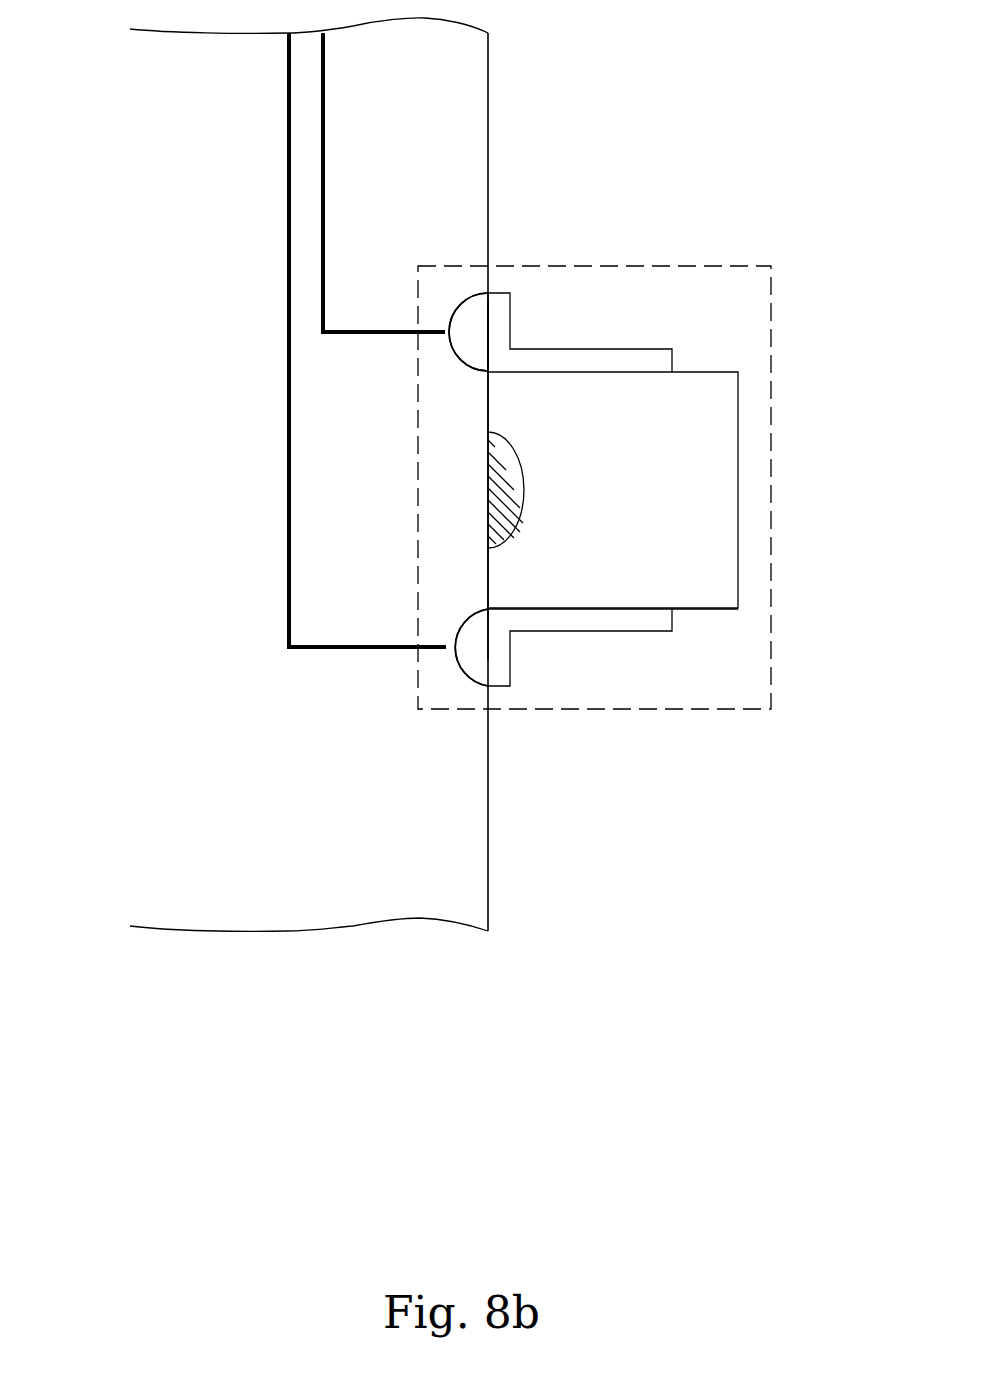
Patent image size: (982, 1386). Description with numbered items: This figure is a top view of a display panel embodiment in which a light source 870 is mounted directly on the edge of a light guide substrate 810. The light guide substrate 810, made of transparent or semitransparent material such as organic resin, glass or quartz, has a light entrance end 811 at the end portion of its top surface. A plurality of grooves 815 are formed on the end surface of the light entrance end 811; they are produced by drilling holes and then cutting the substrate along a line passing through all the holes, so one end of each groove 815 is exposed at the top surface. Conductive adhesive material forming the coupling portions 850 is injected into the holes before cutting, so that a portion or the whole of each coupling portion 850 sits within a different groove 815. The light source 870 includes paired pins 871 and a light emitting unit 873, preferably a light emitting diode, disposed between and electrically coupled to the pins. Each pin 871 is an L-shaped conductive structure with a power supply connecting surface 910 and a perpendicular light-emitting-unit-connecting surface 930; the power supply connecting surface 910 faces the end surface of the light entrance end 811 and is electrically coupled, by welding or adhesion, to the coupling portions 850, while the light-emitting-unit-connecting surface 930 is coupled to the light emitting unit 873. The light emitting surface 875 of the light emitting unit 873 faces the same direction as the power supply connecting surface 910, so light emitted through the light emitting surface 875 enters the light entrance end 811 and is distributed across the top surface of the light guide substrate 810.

The light guide substrate 810 is at (207, 914).
The light entrance end 811 is at (457, 845).
The grooves 815 is at (467, 294).
The coupling portions 850 is at (470, 653).
The light source 870 is at (771, 616).
The paired pins 871 is at (628, 620).
The light emitting unit 873 is at (700, 573).
The light emitting surface 875 is at (488, 582).
The power supply connecting surface 910 is at (487, 322).
The light-emitting-unit-connecting surface 930 is at (613, 372).